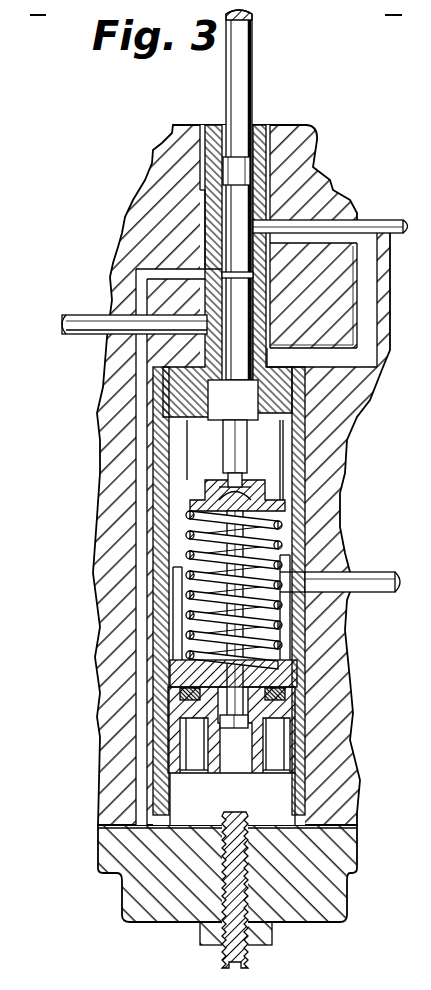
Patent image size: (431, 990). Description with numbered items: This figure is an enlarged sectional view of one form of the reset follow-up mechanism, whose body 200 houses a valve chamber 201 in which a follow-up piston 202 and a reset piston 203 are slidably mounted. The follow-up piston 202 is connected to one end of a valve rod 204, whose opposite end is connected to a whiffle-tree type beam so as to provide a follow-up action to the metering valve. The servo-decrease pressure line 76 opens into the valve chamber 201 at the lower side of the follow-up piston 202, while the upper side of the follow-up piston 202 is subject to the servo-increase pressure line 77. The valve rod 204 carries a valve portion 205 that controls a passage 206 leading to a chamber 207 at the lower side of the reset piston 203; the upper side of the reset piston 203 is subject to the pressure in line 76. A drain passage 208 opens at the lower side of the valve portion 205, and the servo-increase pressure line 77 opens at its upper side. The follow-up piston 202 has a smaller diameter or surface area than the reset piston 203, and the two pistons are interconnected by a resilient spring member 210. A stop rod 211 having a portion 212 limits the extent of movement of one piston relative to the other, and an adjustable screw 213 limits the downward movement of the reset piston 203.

The valve body 200 is at (100, 475).
The valve chamber 201 is at (165, 556).
The follow-up piston 202 is at (292, 478).
The reset piston 203 is at (175, 675).
The valve rod 204 is at (237, 448).
The valve portion 205 is at (225, 272).
The passage 206 is at (142, 716).
The chamber 207 is at (252, 804).
The drain passage 208 is at (95, 322).
The resilient spring member 210 is at (190, 574).
The stop rod 211 is at (230, 608).
The portion 212 is at (236, 738).
The adjustable screw 213 is at (222, 948).
The servo-decrease pressure line 76 is at (357, 572).
The servo-increase pressure line 77 is at (390, 219).